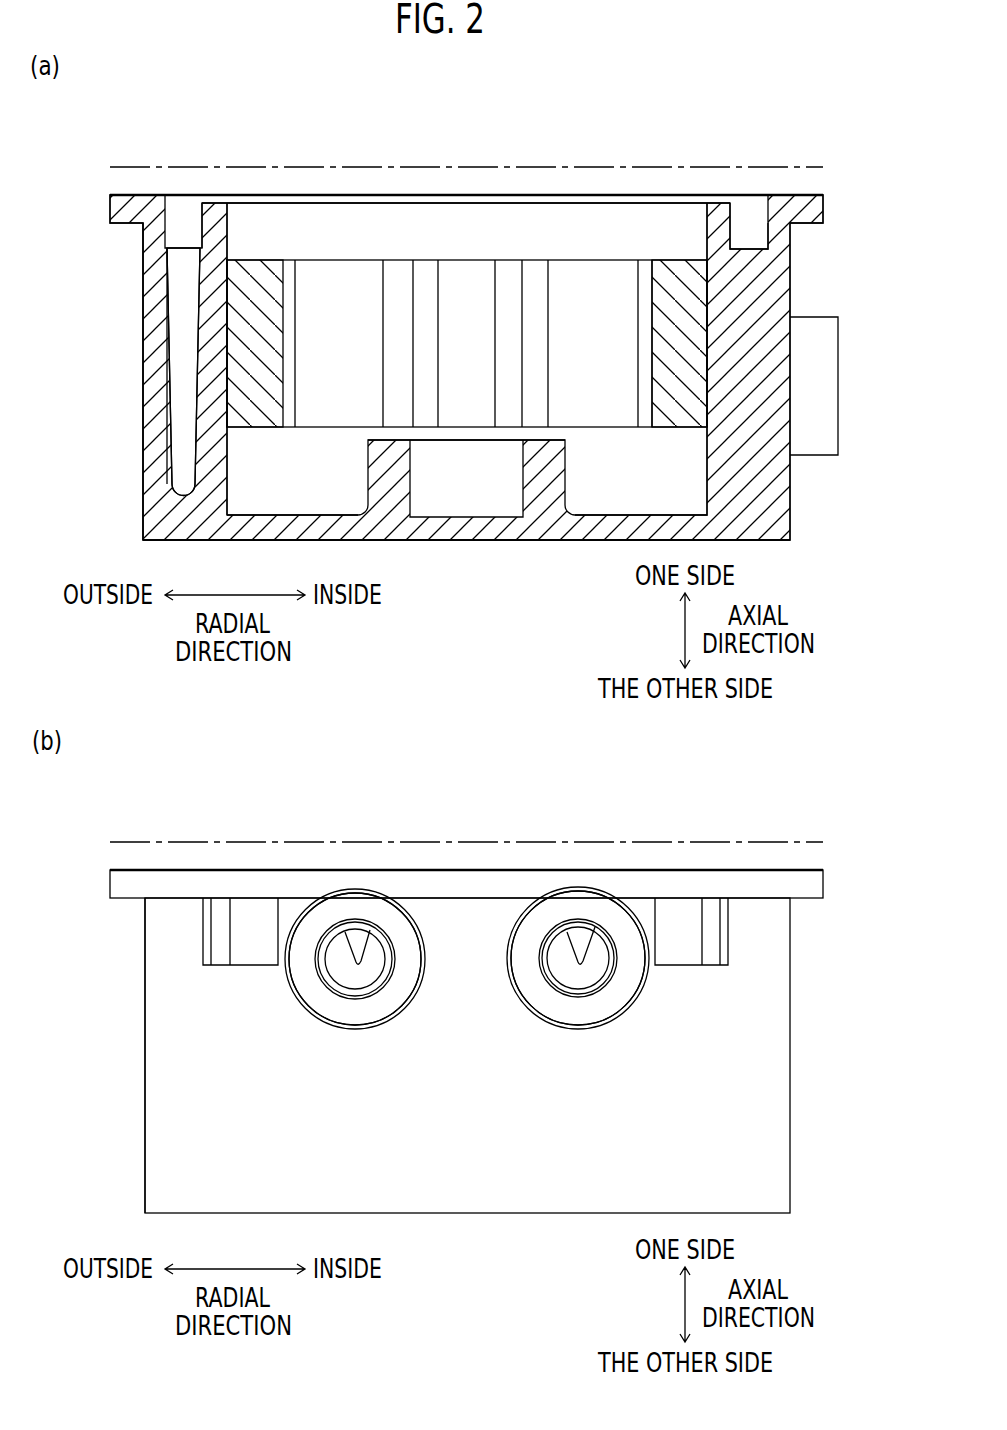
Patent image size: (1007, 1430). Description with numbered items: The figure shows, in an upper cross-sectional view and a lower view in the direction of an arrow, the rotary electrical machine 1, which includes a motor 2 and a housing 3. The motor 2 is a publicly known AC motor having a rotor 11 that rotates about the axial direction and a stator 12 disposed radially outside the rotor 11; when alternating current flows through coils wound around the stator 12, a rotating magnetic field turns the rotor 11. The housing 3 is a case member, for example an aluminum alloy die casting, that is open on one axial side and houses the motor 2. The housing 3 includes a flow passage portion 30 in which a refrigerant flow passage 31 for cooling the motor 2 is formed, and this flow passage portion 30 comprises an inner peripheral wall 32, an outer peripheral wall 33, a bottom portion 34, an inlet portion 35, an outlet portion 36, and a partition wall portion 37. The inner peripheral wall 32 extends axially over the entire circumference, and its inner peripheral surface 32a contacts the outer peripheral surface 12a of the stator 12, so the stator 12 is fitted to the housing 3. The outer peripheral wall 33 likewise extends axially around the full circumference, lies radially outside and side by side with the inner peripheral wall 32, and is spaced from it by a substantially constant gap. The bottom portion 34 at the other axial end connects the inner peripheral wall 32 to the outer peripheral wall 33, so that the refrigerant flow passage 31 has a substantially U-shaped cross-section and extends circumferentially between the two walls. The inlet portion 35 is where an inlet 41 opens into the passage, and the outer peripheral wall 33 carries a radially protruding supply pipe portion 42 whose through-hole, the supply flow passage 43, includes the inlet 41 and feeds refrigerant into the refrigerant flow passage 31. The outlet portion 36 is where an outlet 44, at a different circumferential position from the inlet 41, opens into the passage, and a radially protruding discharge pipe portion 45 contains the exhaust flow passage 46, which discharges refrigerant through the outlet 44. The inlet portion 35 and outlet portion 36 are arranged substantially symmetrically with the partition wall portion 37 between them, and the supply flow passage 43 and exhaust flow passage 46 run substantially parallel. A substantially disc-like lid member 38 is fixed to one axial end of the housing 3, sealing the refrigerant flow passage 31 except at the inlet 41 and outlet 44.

The rotary electrical machine 1 is at (145, 128).
The motor 2 is at (495, 260).
The housing 3 is at (215, 195).
The rotor 11 is at (400, 268).
The stator 12 is at (320, 270).
The outer peripheral surface of the stator 12a is at (720, 362).
The flow passage portion 30 is at (795, 195).
The refrigerant flow passage 31 is at (185, 305).
The inner peripheral wall 32 is at (213, 450).
The inner peripheral surface of the inner peripheral wall 32a is at (238, 350).
The outer peripheral wall 33 is at (153, 342).
The bottom portion 34 is at (545, 540).
The inlet portion 35 is at (318, 892).
The outlet portion 36 is at (538, 1020).
The partition wall portion 37 is at (760, 262).
The lid member 38 is at (690, 185).
The inlet 41 is at (373, 920).
The supply pipe portion 42 is at (323, 1002).
The supply flow passage 43 is at (353, 993).
The outlet 44 is at (593, 925).
The discharge pipe portion 45 is at (587, 1037).
The exhaust flow passage 46 is at (545, 955).